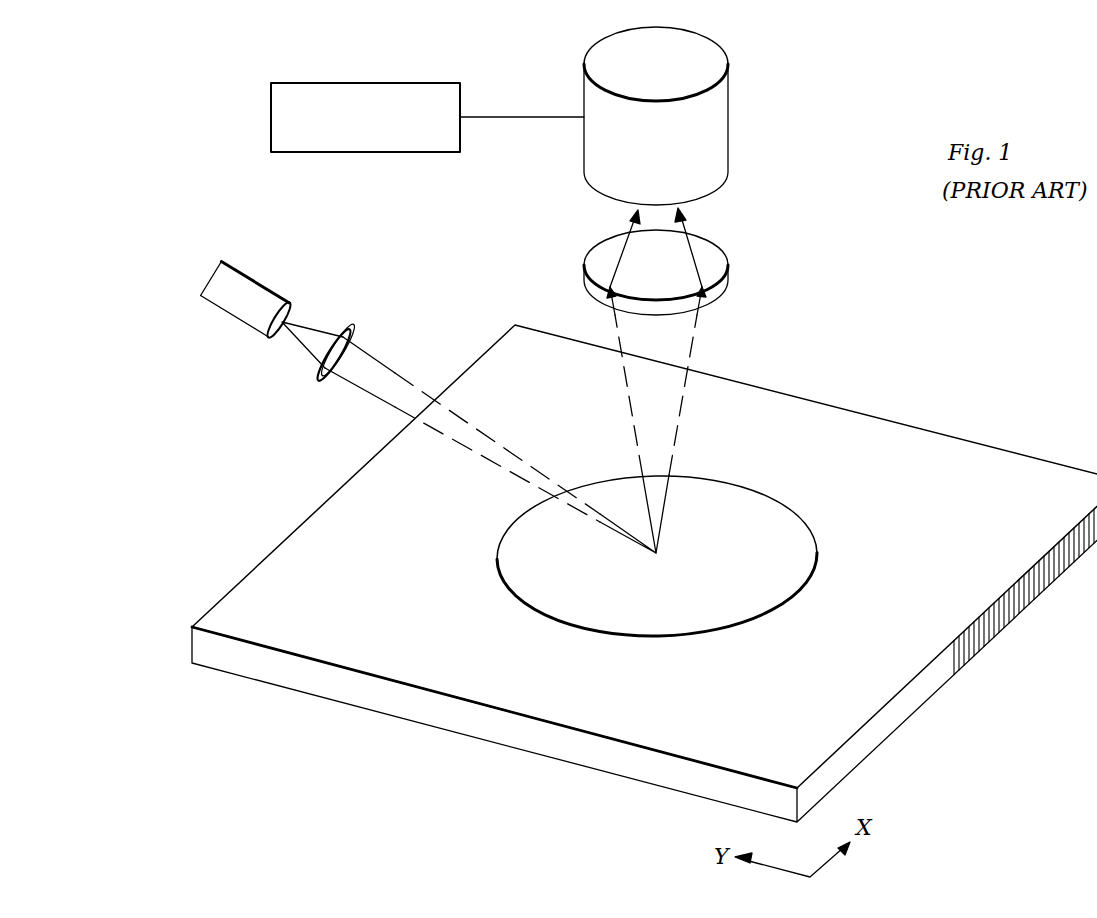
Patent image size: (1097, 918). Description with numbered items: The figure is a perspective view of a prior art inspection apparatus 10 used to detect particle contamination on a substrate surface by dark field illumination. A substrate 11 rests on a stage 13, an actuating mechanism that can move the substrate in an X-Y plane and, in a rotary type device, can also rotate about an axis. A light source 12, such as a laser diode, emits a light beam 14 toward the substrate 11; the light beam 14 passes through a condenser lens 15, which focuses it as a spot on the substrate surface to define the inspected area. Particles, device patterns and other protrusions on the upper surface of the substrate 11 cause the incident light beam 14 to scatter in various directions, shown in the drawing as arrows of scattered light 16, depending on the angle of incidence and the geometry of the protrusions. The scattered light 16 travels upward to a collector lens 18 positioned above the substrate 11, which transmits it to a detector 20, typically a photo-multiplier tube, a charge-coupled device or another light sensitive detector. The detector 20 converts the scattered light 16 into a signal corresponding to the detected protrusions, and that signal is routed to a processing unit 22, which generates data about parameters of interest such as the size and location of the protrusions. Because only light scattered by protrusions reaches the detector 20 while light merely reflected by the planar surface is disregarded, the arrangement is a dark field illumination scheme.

The inspection apparatus 10 is at (1000, 330).
The substrate 11 is at (517, 593).
The light source 12 is at (230, 314).
The stage 13 is at (825, 400).
The light beam 14 is at (450, 438).
The condenser lens 15 is at (323, 378).
The scattered light 16 is at (632, 418).
The collector lens 18 is at (727, 268).
The detector 20 is at (728, 117).
The processing unit 22 is at (271, 118).